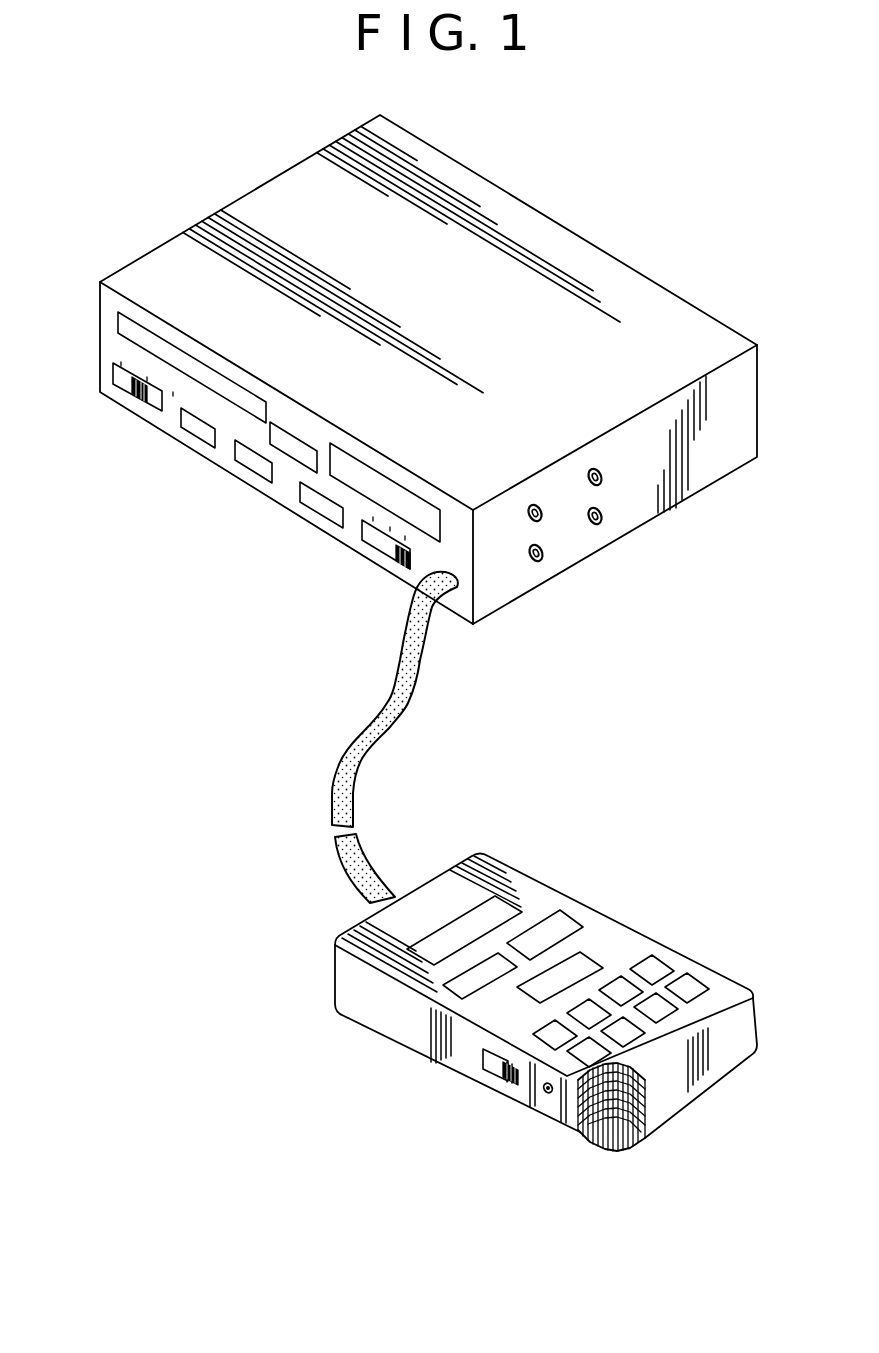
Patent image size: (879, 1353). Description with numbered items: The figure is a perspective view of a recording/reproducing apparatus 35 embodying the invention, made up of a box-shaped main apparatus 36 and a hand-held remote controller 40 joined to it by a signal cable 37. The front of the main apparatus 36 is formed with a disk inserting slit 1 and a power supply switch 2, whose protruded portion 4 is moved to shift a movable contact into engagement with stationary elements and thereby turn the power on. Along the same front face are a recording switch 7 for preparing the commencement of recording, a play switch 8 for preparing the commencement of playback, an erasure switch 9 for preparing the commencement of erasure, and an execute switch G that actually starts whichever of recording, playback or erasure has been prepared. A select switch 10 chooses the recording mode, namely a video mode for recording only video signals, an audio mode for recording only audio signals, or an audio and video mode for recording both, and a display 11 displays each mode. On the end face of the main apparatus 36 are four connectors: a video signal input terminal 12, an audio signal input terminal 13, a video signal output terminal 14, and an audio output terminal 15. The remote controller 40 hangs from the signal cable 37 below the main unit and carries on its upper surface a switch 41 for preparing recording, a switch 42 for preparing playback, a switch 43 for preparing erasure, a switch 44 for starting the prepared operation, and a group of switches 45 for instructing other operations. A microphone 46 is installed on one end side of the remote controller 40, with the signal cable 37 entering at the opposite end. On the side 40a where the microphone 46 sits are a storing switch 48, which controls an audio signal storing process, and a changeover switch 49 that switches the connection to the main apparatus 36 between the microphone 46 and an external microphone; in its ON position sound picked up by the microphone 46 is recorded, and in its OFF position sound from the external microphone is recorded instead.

The disk inserting slit 1 is at (180, 348).
The power supply switch 2 is at (148, 406).
The protruded portion 4 is at (133, 407).
The execute switch G is at (195, 440).
The recording switch 7 is at (247, 468).
The play switch 8 is at (290, 432).
The erasure switch 9 is at (314, 511).
The select switch 10 is at (398, 566).
The display 11 is at (388, 471).
The video signal input terminal 12 is at (533, 502).
The audio signal input terminal 13 is at (594, 466).
The video signal output terminal 14 is at (538, 564).
The audio output terminal 15 is at (599, 528).
The recording/reproducing apparatus 35 is at (585, 218).
The main apparatus 36 is at (641, 273).
The signal cable 37 is at (415, 706).
The remote controller 40 is at (556, 868).
The one side 40a is at (417, 1028).
The switch 41 is at (445, 989).
The switch 42 is at (463, 910).
The switch 43 is at (573, 922).
The switch 44 is at (585, 962).
The switches 45 is at (698, 977).
The microphone 46 is at (648, 1103).
The storing switch 48 is at (547, 1096).
The changeover switch 49 is at (484, 1064).